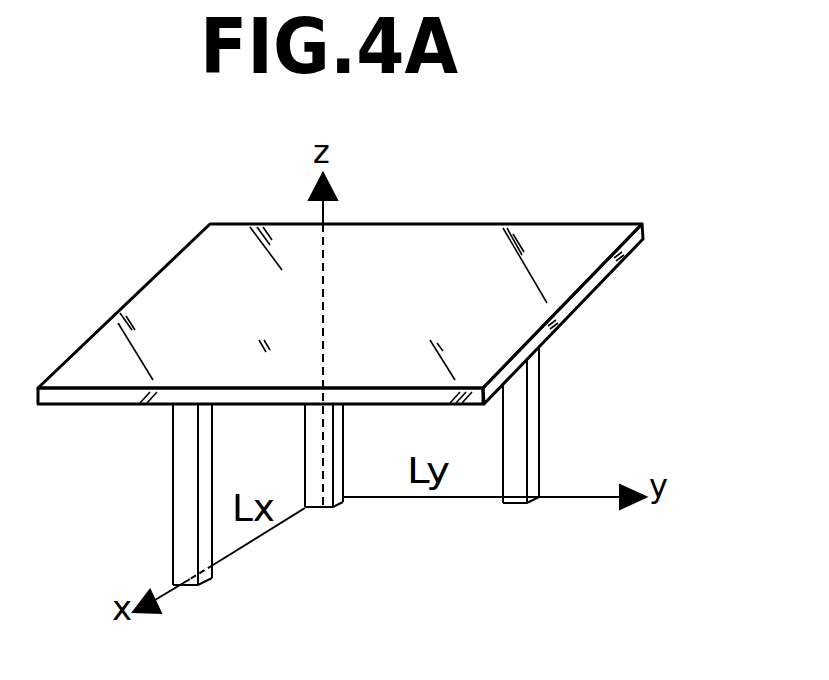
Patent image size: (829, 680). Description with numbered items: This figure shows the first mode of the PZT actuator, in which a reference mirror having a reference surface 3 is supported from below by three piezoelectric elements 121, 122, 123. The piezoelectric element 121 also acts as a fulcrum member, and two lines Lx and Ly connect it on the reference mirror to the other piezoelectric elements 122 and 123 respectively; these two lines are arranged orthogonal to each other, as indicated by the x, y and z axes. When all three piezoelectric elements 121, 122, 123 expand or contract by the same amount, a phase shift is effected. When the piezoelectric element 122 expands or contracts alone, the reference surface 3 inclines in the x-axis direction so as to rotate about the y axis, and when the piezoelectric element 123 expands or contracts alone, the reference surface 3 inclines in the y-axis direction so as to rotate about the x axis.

The reference surface (reference mirror) 3 is at (556, 233).
The piezoelectric element 121 is at (330, 509).
The piezoelectric element 122 is at (213, 580).
The piezoelectric element 123 is at (535, 430).